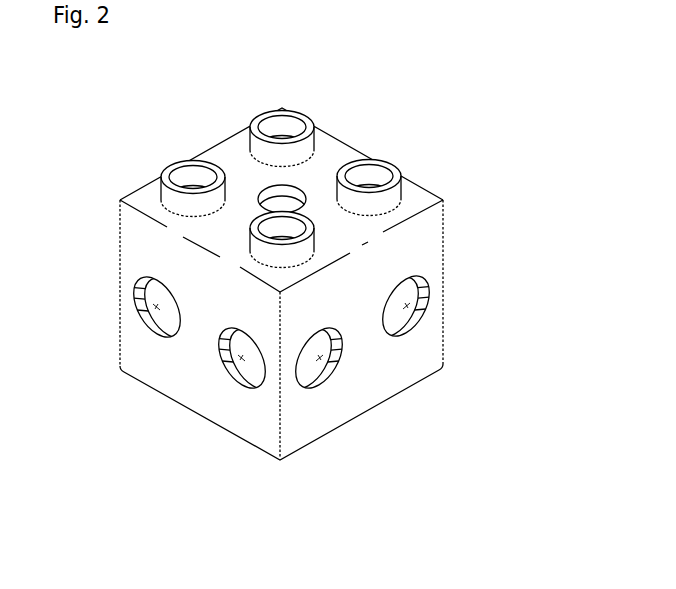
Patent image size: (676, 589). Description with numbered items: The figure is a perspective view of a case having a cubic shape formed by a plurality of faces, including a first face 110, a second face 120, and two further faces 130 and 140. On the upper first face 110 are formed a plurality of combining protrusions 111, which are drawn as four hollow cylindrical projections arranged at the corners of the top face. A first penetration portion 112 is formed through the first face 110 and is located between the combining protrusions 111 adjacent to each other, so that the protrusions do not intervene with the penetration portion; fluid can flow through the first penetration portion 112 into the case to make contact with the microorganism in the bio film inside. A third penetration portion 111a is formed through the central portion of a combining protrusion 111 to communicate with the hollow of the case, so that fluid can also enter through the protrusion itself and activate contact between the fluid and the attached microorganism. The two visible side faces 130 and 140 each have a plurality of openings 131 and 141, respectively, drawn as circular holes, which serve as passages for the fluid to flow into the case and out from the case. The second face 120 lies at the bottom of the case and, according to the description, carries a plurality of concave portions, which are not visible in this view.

The first face 110 is at (227, 155).
The combining protrusions 111 is at (392, 163).
The third penetration portion 111a is at (281, 125).
The first penetration portion 112 is at (282, 199).
The second face 120 is at (303, 453).
The face 130 is at (207, 403).
The openings 131 is at (243, 358).
The face 140 is at (427, 263).
The openings 141 is at (310, 360).